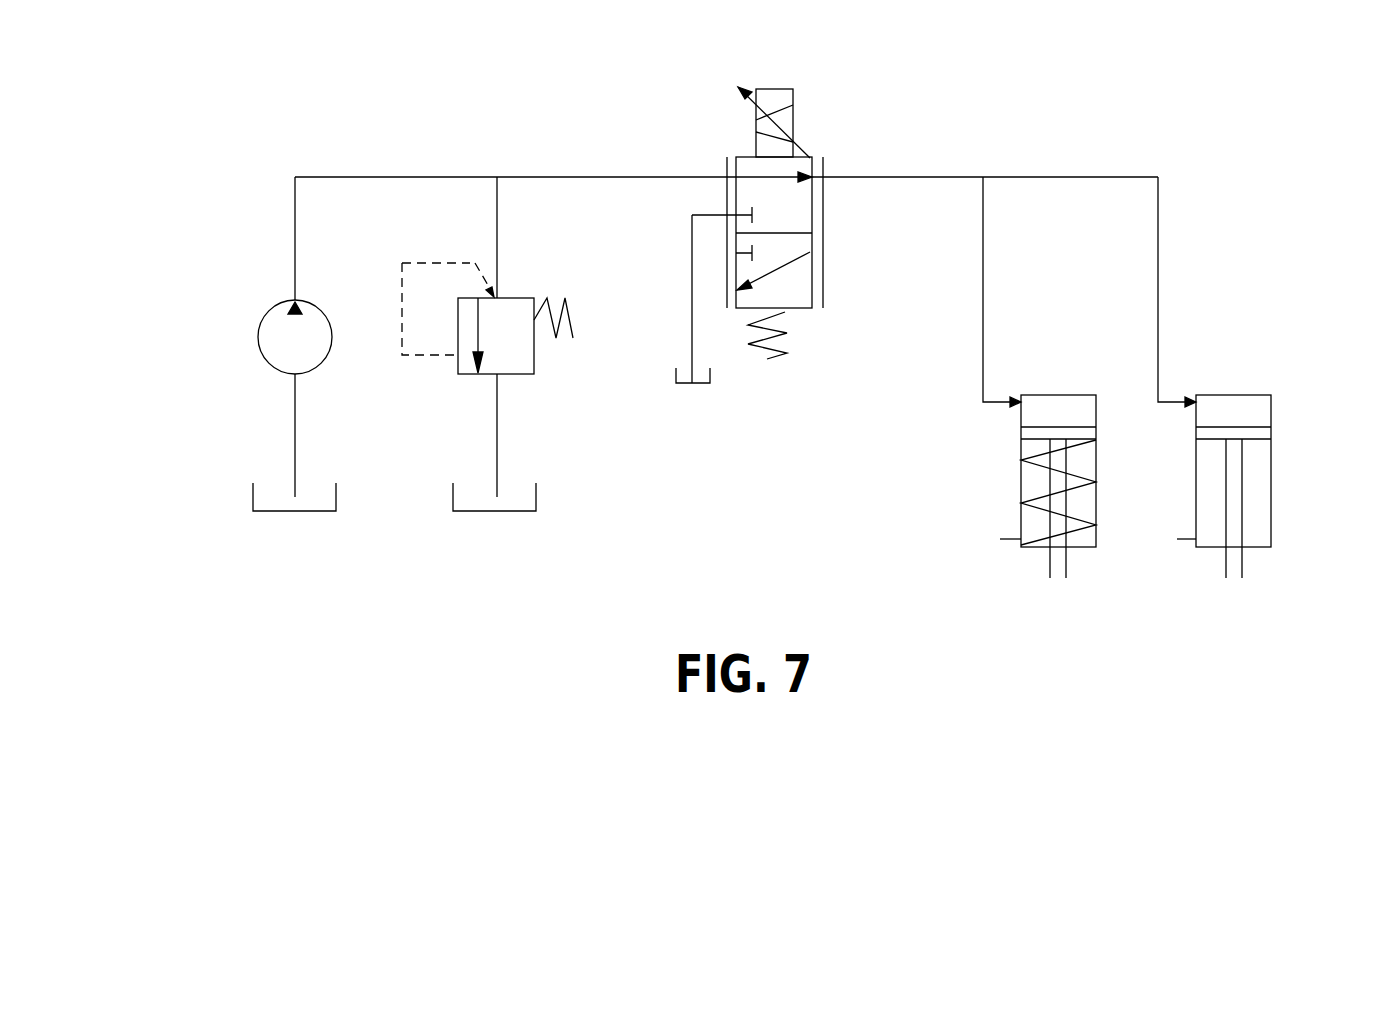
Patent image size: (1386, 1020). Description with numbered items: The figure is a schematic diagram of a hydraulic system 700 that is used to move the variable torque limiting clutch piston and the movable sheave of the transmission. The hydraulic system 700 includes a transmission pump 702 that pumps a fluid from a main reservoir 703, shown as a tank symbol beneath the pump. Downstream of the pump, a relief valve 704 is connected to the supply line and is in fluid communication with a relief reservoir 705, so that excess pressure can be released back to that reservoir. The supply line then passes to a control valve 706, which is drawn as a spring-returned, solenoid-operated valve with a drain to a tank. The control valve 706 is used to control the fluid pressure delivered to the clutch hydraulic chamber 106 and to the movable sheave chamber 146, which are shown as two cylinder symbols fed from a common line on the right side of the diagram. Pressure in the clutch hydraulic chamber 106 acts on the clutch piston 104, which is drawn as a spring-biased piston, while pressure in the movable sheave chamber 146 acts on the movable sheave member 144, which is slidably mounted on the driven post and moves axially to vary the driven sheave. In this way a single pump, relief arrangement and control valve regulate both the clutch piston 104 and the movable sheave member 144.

The hydraulic system 700 is at (1283, 180).
The transmission pump 702 is at (259, 325).
The main reservoir 703 is at (323, 512).
The relief valve 704 is at (513, 355).
The relief reservoir 705 is at (523, 512).
The control valve 706 is at (750, 157).
The clutch hydraulic chamber 106 is at (1057, 410).
The clutch piston 104 is at (1022, 458).
The movable sheave chamber 146 is at (1240, 410).
The movable sheave member 144 is at (1272, 502).